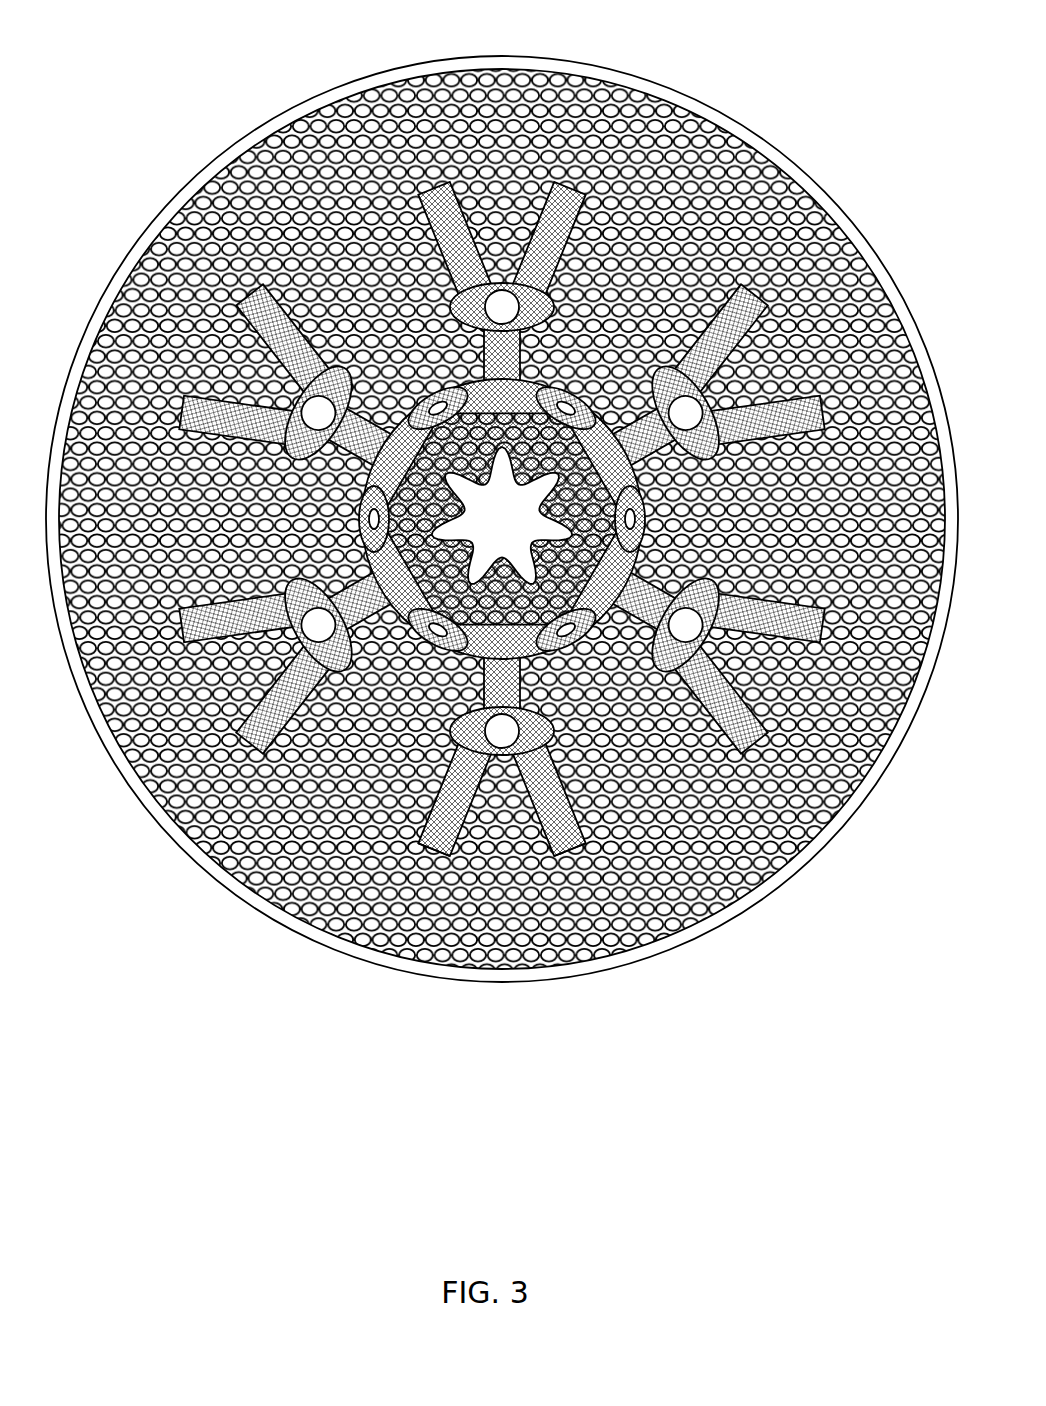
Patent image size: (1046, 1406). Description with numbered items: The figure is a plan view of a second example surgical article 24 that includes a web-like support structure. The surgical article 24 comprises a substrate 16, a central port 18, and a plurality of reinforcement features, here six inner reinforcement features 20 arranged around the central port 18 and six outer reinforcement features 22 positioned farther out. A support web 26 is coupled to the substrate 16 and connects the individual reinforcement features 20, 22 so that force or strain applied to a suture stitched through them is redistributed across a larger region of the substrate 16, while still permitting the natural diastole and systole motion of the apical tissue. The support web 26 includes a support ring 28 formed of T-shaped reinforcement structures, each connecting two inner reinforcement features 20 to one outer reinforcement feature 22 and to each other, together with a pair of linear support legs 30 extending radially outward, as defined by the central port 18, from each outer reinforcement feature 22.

The substrate 16 is at (285, 878).
The central port 18 is at (491, 534).
The inner reinforcement features 20 is at (555, 395).
The outer reinforcement features 22 is at (710, 417).
The surgical article 24 is at (148, 32).
The support web 26 is at (245, 285).
The support ring 28 is at (512, 670).
The support legs 30 is at (572, 828).